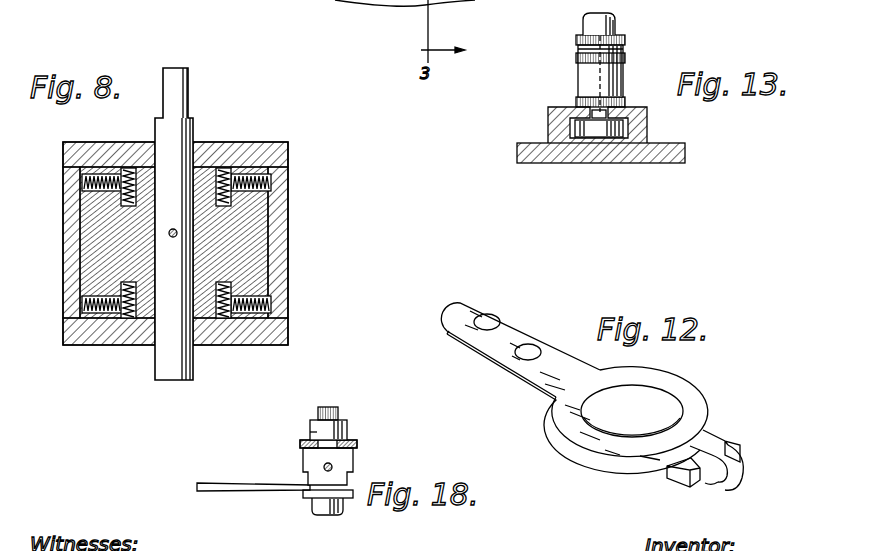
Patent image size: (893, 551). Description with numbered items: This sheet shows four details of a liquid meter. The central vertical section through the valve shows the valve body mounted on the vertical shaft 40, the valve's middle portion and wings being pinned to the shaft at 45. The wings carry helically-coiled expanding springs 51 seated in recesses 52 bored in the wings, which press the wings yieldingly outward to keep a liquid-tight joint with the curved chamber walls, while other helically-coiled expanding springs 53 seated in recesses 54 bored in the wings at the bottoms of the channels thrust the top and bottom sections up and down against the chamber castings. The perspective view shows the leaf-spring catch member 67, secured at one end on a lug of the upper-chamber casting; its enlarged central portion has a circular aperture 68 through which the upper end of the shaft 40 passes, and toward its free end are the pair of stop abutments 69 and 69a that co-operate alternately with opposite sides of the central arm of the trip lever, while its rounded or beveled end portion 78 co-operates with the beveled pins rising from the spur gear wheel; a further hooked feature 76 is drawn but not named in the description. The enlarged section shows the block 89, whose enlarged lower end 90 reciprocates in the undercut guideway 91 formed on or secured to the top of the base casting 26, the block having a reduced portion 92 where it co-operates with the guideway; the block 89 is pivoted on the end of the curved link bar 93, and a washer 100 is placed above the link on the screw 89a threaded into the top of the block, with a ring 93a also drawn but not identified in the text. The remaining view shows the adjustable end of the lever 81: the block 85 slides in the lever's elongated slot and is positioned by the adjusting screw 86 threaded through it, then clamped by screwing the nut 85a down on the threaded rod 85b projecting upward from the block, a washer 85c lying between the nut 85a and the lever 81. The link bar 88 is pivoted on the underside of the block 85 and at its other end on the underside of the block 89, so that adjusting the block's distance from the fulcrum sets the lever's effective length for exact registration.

In FIG. 8, the shaft 40 is at (166, 362).
In FIG. 8, the pin 45 is at (173, 229).
In FIG. 8, the helically-coiled expanding spring 51 is at (87, 182).
In FIG. 8, the recess 52 is at (107, 190).
In FIG. 8, the helically-coiled expanding spring 53 is at (133, 168).
In FIG. 8, the recess 54 is at (85, 169).
In FIG. 13, the base casting 26 is at (560, 157).
In FIG. 13, the link bar 88 is at (578, 102).
In FIG. 18, the link bar 88 is at (270, 493).
In FIG. 13, the block 89 is at (588, 73).
In FIG. 13, the screw 89a is at (617, 17).
In FIG. 13, the enlarged lower end 90 is at (598, 128).
In FIG. 13, the undercut guideway 91 is at (560, 118).
In FIG. 13, the reduced portion 92 is at (617, 102).
In FIG. 13, the curved link bar 93 is at (577, 60).
In FIG. 13, the upper knurled ring 93a is at (578, 42).
In FIG. 13, the washer 100 is at (626, 47).
In FIG. 12, the leaf-spring catch member 67 is at (573, 362).
In FIG. 12, the circular aperture 68 is at (635, 386).
In FIG. 12, the stop abutment 69 is at (728, 448).
In FIG. 12, the stop abutment 69a is at (680, 480).
In FIG. 12, the hook 76 is at (741, 490).
In FIG. 12, the rounded or beveled end portion 78 is at (712, 487).
In FIG. 18, the lever 81 is at (300, 444).
In FIG. 18, the block 85 is at (352, 462).
In FIG. 18, the nut 85a is at (345, 426).
In FIG. 18, the threaded rod 85b is at (334, 408).
In FIG. 18, the washer 85c is at (317, 433).
In FIG. 18, the adjusting screw 86 is at (323, 466).